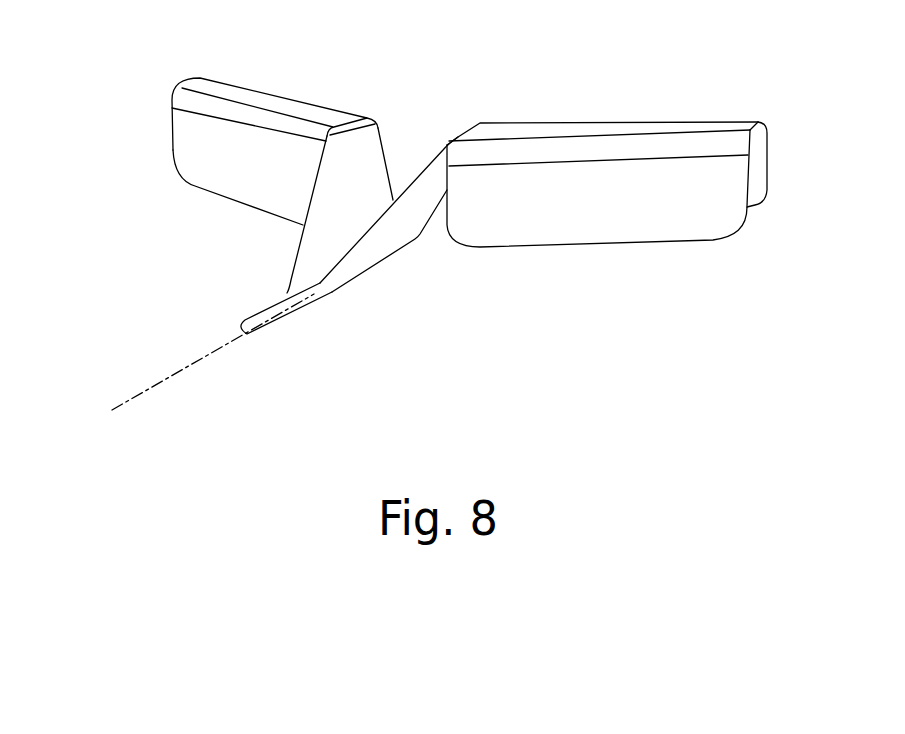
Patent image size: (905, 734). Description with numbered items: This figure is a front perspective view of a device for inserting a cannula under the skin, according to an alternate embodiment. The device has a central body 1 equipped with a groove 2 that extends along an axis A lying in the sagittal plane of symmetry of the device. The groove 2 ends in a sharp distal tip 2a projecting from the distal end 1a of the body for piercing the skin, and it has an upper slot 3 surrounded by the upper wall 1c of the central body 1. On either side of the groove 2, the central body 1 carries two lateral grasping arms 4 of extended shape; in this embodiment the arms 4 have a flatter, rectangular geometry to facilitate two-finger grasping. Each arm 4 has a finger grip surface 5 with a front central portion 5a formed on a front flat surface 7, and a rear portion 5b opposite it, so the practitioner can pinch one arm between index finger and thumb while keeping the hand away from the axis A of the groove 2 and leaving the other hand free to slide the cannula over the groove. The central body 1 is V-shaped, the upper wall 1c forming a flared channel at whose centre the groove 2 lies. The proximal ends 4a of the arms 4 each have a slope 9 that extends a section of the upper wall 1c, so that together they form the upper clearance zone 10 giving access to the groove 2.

The central body 1 is at (331, 205).
The distal end 1a is at (335, 293).
The upper wall 1c is at (298, 247).
The groove 2 is at (247, 364).
The sharp distal tip 2a is at (247, 322).
The upper slot 3 is at (247, 364).
The lateral grasping arm 4 is at (473, 159).
The proximal end 4a is at (353, 87).
The finger grip surface 5 is at (824, 151).
The front central portion 5a is at (401, 198).
The rear portion 5b is at (767, 153).
The front flat surface 7 is at (177, 147).
The slope 9 is at (355, 143).
The clearance zone 10 is at (409, 134).
The axis A is at (125, 400).